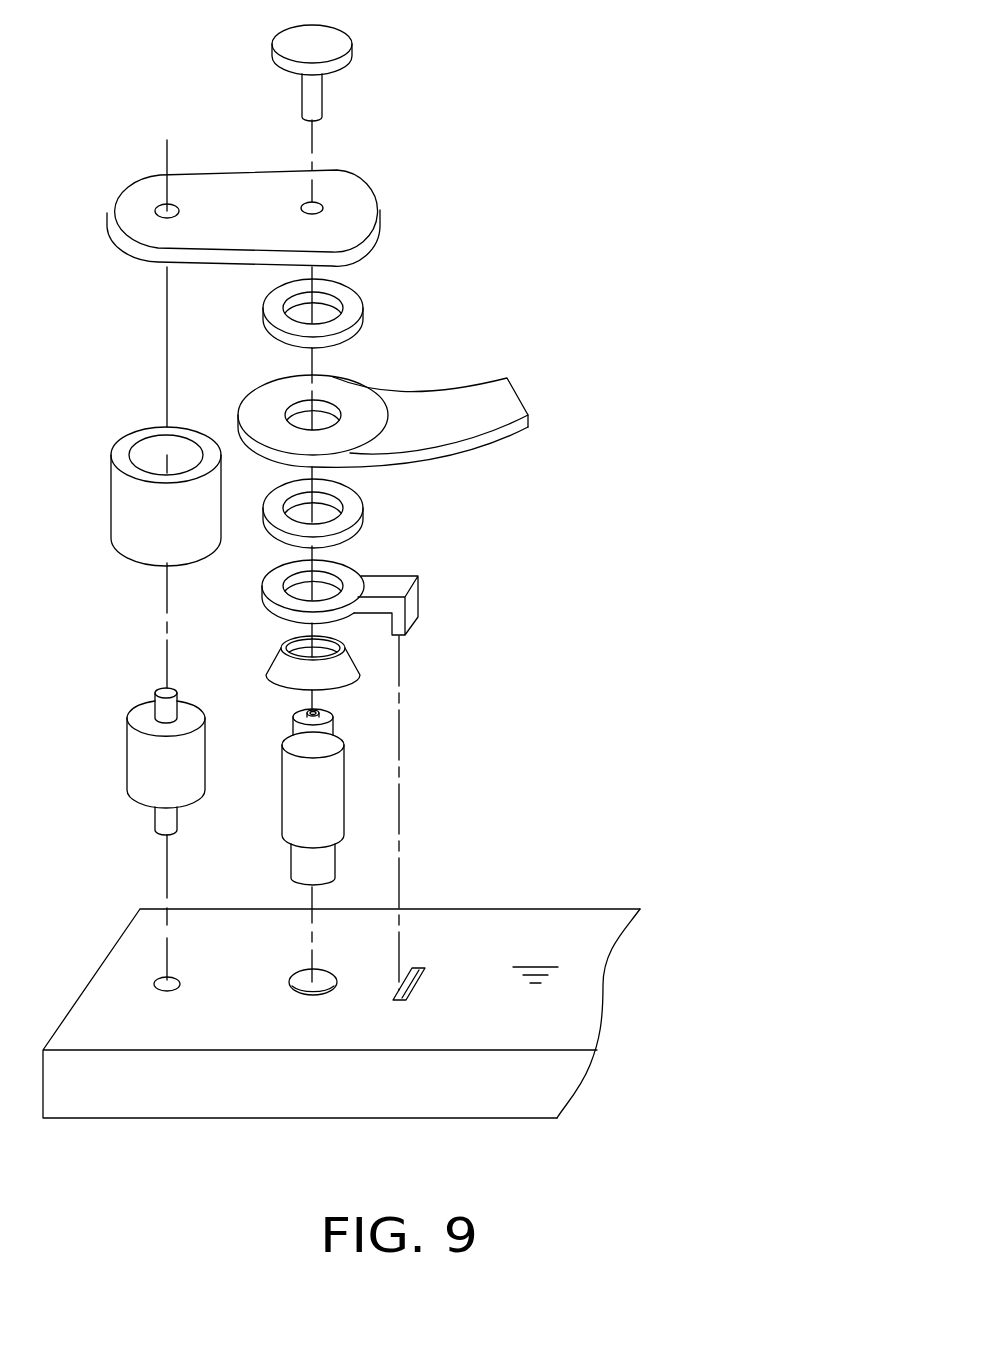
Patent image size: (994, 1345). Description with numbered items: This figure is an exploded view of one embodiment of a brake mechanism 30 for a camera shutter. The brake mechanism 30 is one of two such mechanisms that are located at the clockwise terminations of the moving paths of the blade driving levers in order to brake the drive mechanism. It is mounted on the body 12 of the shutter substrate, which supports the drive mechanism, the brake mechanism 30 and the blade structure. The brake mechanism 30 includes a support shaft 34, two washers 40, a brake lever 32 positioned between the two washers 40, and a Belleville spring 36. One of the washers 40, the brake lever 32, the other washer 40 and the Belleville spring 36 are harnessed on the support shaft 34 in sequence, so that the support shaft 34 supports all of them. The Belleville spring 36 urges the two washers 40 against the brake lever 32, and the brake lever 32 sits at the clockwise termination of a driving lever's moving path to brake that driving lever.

The brake mechanism 30 is at (536, 70).
The washer 40 is at (353, 305).
The brake lever 32 is at (485, 410).
The Belleville spring 36 is at (342, 673).
The support shaft 34 is at (321, 800).
The body 12 is at (535, 945).